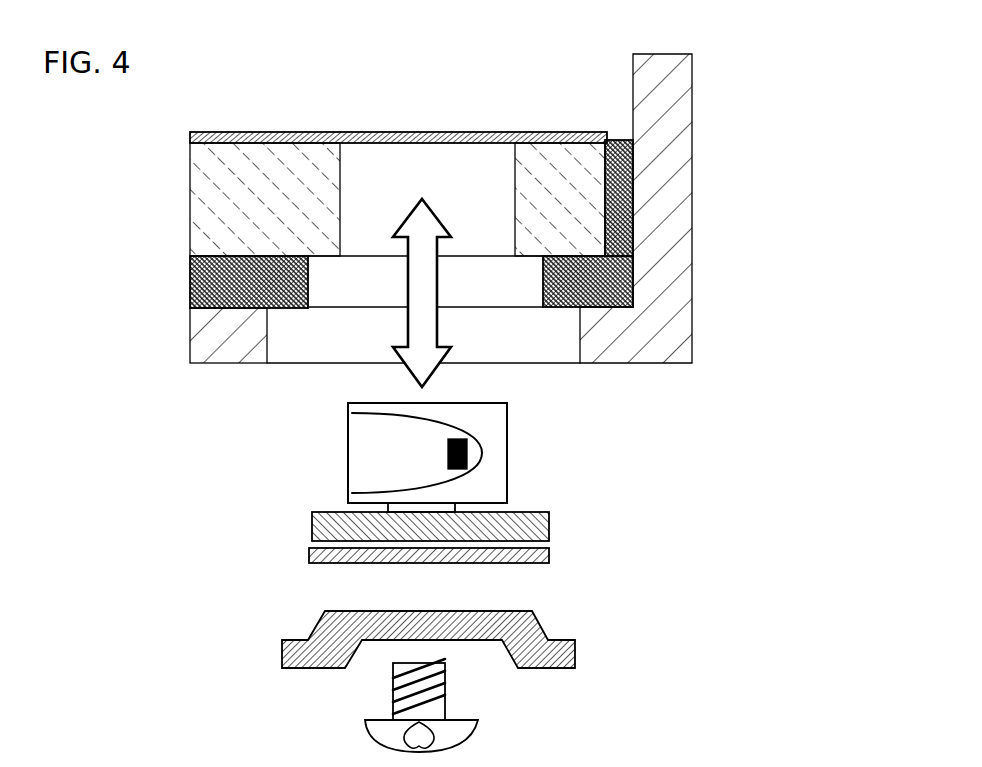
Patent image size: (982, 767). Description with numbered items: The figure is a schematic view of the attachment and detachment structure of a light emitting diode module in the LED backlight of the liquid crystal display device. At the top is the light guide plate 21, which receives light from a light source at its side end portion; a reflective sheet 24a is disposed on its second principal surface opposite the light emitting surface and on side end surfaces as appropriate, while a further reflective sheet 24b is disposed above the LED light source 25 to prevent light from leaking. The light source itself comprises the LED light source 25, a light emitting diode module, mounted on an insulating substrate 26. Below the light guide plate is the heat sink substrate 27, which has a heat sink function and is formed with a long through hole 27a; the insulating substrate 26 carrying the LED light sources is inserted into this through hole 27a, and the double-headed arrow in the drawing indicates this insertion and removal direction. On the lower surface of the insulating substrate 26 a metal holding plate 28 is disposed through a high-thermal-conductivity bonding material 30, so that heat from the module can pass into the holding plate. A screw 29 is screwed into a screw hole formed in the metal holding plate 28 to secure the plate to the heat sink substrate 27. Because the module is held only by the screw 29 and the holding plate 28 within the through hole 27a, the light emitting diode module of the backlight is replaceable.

The light guide plate 21 is at (218, 172).
The reflective sheet 24a is at (189, 263).
The reflective sheet 24b is at (293, 131).
The LED light source 25 is at (496, 453).
The insulating substrate 26 is at (549, 519).
The heat sink substrate 27 is at (189, 289).
The through hole 27a is at (327, 290).
The metal holding plate 28 is at (540, 623).
The screw 29 is at (477, 731).
The high-thermal-conductivity bonding material 30 is at (549, 555).